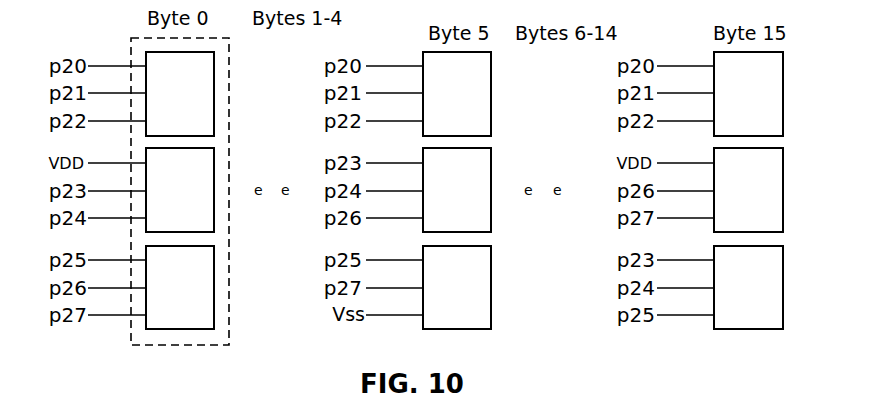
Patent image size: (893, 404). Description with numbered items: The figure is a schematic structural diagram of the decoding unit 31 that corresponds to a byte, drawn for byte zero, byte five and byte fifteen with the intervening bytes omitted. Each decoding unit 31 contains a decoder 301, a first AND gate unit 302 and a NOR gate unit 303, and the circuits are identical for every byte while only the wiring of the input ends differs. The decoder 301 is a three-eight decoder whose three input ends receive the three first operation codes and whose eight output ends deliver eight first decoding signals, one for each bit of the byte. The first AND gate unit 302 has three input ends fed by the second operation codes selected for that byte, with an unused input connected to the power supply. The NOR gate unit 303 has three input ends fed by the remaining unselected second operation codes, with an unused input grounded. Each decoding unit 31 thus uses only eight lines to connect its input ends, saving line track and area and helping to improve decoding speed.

The decoding unit 31 is at (131, 46).
The decoder 301 is at (464, 94).
The first AND gate unit 302 is at (464, 190).
The NOR gate unit 303 is at (464, 287).